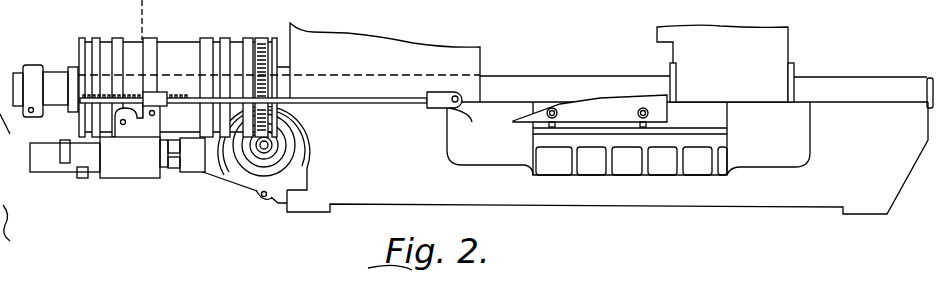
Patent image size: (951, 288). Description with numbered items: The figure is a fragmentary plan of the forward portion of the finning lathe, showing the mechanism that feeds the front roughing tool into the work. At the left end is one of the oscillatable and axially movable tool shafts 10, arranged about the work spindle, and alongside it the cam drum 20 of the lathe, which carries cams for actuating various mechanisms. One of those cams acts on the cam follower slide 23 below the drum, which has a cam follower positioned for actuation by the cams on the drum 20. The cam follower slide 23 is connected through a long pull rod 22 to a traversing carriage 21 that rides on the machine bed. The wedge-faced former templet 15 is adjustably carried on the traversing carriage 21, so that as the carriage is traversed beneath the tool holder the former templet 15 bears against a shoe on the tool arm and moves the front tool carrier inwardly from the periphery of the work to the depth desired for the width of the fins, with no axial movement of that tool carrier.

The tool shaft 10 is at (55, 70).
The former templet 15 is at (601, 105).
The cam drum 20 is at (168, 55).
The traversing carriage 21 is at (503, 138).
The pull rod 22 is at (390, 103).
The cam follower slide 23 is at (140, 160).